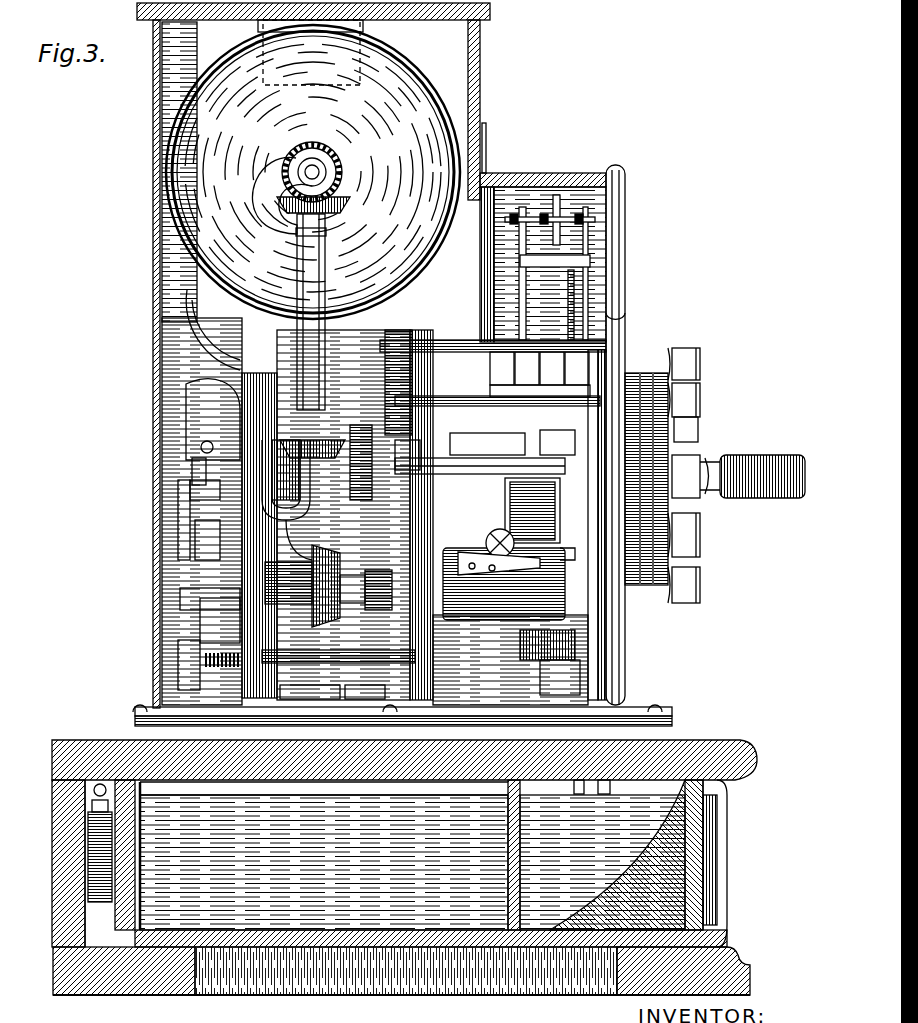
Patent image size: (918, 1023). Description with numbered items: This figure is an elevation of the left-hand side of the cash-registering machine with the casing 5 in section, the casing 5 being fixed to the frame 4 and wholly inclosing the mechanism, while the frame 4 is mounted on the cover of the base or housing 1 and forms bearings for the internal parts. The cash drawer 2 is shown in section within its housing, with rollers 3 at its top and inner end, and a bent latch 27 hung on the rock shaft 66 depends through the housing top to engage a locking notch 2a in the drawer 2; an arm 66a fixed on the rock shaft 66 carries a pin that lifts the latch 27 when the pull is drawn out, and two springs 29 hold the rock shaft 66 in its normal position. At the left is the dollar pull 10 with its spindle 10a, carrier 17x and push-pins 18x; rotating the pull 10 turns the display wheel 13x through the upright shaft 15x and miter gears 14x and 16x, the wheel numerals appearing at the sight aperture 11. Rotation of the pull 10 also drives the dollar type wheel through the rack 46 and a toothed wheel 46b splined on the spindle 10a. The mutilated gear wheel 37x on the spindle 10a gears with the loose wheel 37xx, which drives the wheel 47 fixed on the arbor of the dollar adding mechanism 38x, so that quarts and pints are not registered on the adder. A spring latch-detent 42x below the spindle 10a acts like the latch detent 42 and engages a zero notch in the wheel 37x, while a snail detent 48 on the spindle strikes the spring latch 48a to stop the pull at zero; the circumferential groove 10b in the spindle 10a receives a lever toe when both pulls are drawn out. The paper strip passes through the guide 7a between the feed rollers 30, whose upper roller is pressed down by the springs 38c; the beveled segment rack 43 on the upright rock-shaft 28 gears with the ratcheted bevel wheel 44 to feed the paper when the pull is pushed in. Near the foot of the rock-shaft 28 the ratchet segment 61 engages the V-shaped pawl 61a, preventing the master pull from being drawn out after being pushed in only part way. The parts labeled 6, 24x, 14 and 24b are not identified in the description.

The base or housing 1 is at (404, 867).
The cash drawer 2 is at (412, 862).
The rollers 3 is at (324, 799).
The bent latch 27 is at (579, 794).
The locking notch 2a is at (604, 794).
The casing 5 is at (480, 68).
The sight aperture 11 is at (487, 140).
The counter compartment 6 is at (500, 290).
The display wheel 13x is at (313, 169).
The miter gear 16x is at (342, 176).
The upright shaft 15x is at (325, 258).
The cam disk 24x is at (268, 283).
The frame 4 is at (297, 292).
The carrier 17x is at (637, 435).
The dollar pull 10 is at (738, 463).
The push-pins 18x is at (697, 376).
The wheel 47 is at (493, 334).
The wheel 37xx is at (398, 370).
The dollar adding mechanism 38x is at (530, 352).
The guide 7a is at (482, 445).
The rack 46 is at (556, 450).
The pull spindle 10a is at (480, 474).
The toothed wheel 46b is at (532, 510).
The feed rollers 30 is at (504, 584).
The spring latch-detent 42x is at (488, 551).
The springs 38c is at (553, 560).
The latch detent 42 is at (406, 455).
The mutilated gear wheel 37x is at (357, 462).
The miter gear 14x is at (324, 424).
The bracket 14 is at (273, 480).
The spring latch 48a is at (274, 537).
The beveled segment rack 43 is at (288, 575).
The bevel wheel 44 is at (352, 596).
The rock shaft 66 is at (527, 645).
The arm 66a is at (525, 677).
The ratchet segment 61 is at (300, 690).
The V-shaped pawl 61a is at (350, 690).
The lever 24b is at (198, 440).
The snail detent 48 is at (192, 468).
The circumferential groove 10b is at (190, 490).
The upright rock-shaft 28 is at (180, 598).
The springs 29 is at (178, 660).